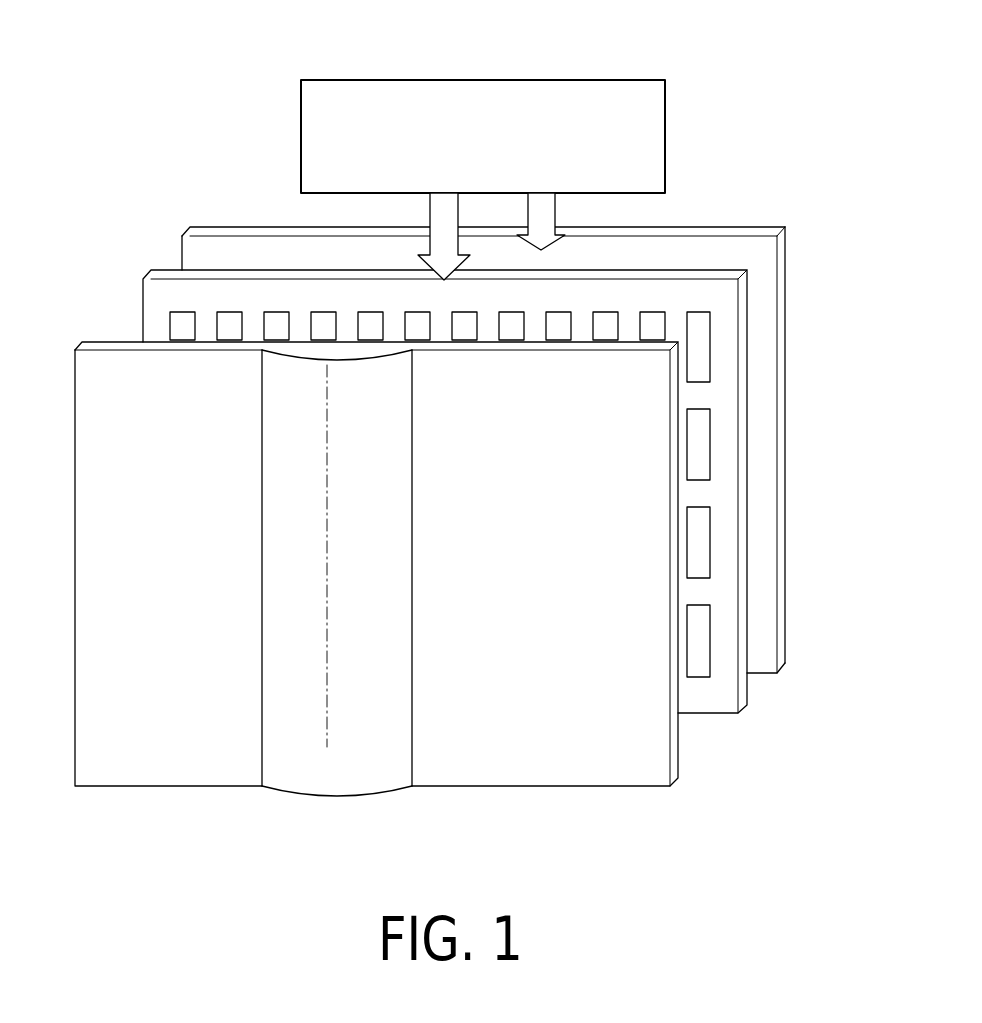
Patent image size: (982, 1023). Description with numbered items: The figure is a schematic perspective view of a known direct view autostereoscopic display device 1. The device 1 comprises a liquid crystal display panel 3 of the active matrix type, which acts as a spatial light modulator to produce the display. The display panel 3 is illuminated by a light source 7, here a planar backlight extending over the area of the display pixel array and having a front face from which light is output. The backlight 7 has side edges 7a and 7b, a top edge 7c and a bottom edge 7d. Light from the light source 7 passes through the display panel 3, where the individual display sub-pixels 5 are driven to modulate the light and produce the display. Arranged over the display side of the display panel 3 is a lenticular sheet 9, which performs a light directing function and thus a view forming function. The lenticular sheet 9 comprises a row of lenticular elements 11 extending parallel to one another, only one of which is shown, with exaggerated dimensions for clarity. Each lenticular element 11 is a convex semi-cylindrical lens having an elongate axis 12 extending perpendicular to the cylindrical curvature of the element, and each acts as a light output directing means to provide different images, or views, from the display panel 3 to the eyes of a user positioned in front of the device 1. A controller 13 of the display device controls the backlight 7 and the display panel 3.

The direct view autostereoscopic display device 1 is at (104, 216).
The liquid crystal display panel 3 is at (748, 690).
The display sub-pixels 5 is at (705, 355).
The light source 7 is at (509, 449).
The side edge 7a is at (786, 325).
The side edge 7b is at (182, 248).
The top edge 7c is at (740, 226).
The bottom edge 7d is at (755, 673).
The lenticular sheet 9 is at (678, 760).
The lenticular elements 11 is at (347, 780).
The elongate axis 12 is at (328, 527).
The controller 13 is at (665, 138).